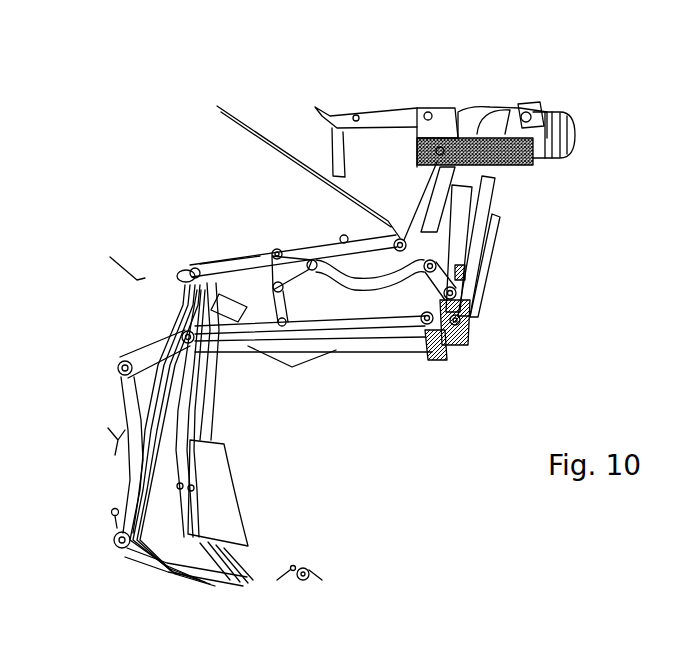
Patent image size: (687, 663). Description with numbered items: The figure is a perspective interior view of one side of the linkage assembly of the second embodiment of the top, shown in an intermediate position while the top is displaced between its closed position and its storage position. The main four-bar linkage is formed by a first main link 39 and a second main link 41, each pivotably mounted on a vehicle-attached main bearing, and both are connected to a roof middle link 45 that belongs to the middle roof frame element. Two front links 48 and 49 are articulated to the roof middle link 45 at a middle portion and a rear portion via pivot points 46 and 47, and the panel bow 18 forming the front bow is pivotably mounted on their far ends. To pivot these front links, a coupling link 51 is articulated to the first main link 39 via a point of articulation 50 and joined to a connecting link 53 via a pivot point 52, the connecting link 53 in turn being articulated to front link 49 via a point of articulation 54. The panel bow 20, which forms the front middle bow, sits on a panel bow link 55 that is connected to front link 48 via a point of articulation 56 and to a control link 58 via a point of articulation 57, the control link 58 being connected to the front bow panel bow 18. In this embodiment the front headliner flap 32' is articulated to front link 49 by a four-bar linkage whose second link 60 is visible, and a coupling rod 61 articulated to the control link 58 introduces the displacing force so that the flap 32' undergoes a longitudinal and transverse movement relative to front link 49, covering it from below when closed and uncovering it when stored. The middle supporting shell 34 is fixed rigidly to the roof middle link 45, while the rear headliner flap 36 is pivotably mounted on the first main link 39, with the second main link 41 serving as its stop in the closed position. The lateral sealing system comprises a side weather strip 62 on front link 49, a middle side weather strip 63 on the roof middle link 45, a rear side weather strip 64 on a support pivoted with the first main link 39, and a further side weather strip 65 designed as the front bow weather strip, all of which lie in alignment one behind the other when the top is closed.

The panel bow 18 is at (574, 117).
The panel bow 20 is at (247, 145).
The front headliner flap 32' is at (539, 246).
The middle supporting shell 34 is at (300, 350).
The rear headliner flap 36 is at (215, 500).
The first main link 39 is at (204, 408).
The second main link 41 is at (133, 392).
The roof middle link 45 is at (233, 300).
The pivot point 46 is at (307, 345).
The pivot point 47 is at (428, 310).
The front link 48 is at (281, 252).
The front link 49 is at (462, 323).
The point of articulation 50 is at (197, 274).
The coupling link 51 is at (215, 267).
The pivot point 52 is at (417, 150).
The connecting link 53 is at (458, 272).
The point of articulation 54 is at (455, 290).
The panel bow link 55 is at (337, 235).
The point of articulation 56 is at (270, 247).
The point of articulation 57 is at (400, 240).
The control link 58 is at (437, 212).
The link 60 is at (440, 244).
The coupling rod 61 is at (442, 150).
The side weather strip 62 is at (468, 318).
The middle side weather strip 63 is at (297, 370).
The rear side weather strip 64 is at (213, 370).
The side weather strip 65 is at (538, 118).